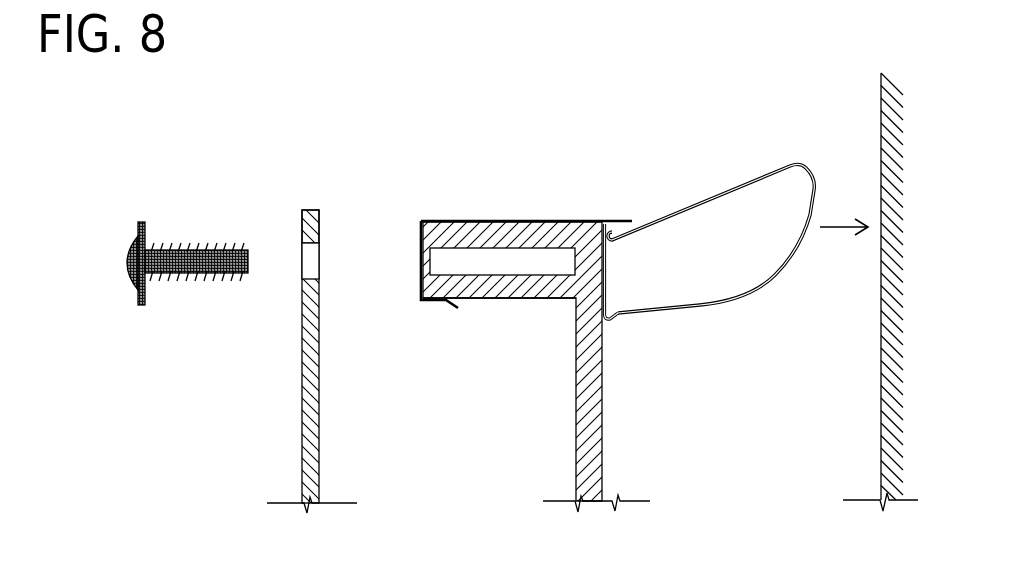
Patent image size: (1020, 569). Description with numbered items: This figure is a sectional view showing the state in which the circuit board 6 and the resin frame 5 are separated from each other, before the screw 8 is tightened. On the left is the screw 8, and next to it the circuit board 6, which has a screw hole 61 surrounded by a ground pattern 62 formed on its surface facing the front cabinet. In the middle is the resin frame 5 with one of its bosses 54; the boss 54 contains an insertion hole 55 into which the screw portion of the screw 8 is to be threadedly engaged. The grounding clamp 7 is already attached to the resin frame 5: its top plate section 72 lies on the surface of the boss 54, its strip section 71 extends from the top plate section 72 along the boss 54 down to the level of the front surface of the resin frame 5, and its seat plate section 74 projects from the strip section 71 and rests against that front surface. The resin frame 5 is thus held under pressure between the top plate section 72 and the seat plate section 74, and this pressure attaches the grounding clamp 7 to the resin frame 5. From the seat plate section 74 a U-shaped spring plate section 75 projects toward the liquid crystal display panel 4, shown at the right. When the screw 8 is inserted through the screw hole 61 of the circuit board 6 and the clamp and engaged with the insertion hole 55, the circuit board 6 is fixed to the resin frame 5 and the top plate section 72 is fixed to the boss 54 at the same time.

The screw 8 is at (126, 252).
The circuit board 6 is at (309, 347).
The screw hole 61 is at (303, 278).
The ground pattern 62 is at (318, 233).
The resin frame 5 is at (519, 367).
The boss 54 is at (526, 292).
The insertion hole 55 is at (434, 270).
The grounding clamp 7 is at (495, 228).
The strip section 71 is at (482, 220).
The top plate section 72 is at (420, 293).
The seat plate section 74 is at (606, 264).
The U-shaped spring plate section 75 is at (745, 184).
The liquid crystal display panel 4 is at (884, 425).